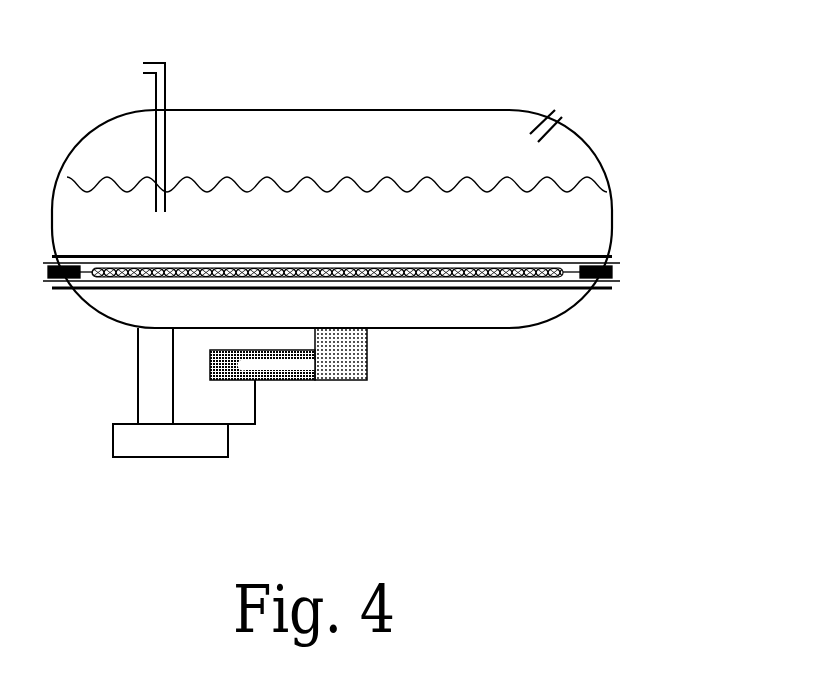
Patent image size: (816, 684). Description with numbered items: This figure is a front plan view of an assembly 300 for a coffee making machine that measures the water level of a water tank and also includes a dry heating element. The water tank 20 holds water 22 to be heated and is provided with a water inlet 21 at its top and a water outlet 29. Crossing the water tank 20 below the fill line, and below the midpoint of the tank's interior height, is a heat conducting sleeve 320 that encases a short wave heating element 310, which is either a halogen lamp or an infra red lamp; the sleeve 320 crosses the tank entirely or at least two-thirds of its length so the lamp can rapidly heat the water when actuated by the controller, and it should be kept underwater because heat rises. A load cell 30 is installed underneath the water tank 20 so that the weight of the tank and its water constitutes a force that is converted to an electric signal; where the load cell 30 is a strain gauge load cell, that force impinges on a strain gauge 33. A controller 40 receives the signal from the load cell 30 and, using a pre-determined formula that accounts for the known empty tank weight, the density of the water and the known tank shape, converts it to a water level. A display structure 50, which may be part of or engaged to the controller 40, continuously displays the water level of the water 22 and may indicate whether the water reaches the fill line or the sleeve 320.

The water tank 20 is at (545, 322).
The water inlet 21 is at (141, 68).
The water 22 is at (554, 239).
The water outlet 29 is at (566, 108).
The load cell 30 is at (288, 383).
The strain gauge 33 is at (351, 363).
The controller 40 is at (111, 446).
The display structure 50 is at (137, 377).
The assembly 300 is at (320, 108).
The short wave heating element 310 is at (446, 273).
The heat conducting sleeve 320 is at (121, 290).